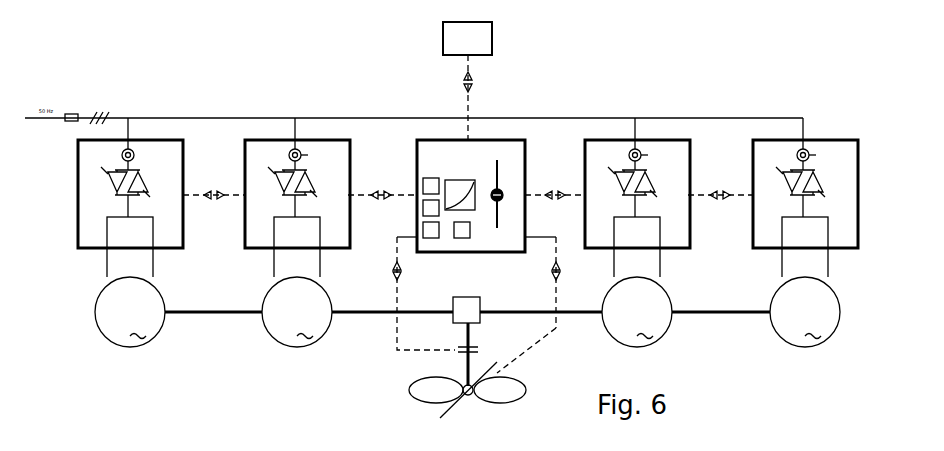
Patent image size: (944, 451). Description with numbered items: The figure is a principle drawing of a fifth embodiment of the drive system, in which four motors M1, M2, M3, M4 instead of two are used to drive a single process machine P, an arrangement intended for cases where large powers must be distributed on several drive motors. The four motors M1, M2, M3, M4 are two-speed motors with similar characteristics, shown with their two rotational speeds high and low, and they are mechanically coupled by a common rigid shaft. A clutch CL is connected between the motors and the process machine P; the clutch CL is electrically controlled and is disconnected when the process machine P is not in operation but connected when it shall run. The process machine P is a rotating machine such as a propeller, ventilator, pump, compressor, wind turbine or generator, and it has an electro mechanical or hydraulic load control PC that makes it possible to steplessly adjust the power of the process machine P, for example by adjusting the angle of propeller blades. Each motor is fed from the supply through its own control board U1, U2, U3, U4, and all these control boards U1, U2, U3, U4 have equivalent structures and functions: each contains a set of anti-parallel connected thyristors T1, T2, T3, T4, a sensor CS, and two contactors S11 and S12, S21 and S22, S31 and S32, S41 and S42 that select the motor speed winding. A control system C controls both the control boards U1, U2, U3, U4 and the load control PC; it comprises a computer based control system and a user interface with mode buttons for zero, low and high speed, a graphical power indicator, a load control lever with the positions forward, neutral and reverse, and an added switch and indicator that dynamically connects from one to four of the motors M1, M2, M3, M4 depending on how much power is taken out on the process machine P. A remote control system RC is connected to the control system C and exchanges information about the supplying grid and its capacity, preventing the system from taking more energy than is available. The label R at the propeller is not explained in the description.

The remote control system RC is at (467, 38).
The control system C is at (471, 196).
The control board U1 is at (297, 197).
The control board U2 is at (637, 197).
The control board U3 is at (130, 197).
The control board U4 is at (805, 197).
The anti-parallel connected thyristors T1 is at (292, 182).
The anti-parallel connected thyristors T2 is at (632, 182).
The anti-parallel connected thyristors T3 is at (125, 182).
The anti-parallel connected thyristors T4 is at (800, 182).
The sensor CS is at (134, 155).
The contactor S11 is at (265, 255).
The contactor S12 is at (311, 255).
The contactor S21 is at (605, 255).
The contactor S22 is at (651, 255).
The contactor S31 is at (108, 241).
The contactor S32 is at (154, 241).
The contactor S41 is at (773, 255).
The contactor S42 is at (819, 255).
The motor M1 is at (297, 312).
The motor M2 is at (637, 312).
The motor M3 is at (130, 312).
The motor M4 is at (805, 312).
The clutch CL is at (461, 341).
The process machine P is at (467, 397).
The load control PC is at (526, 350).
The pitch adjustment rod R is at (465, 392).